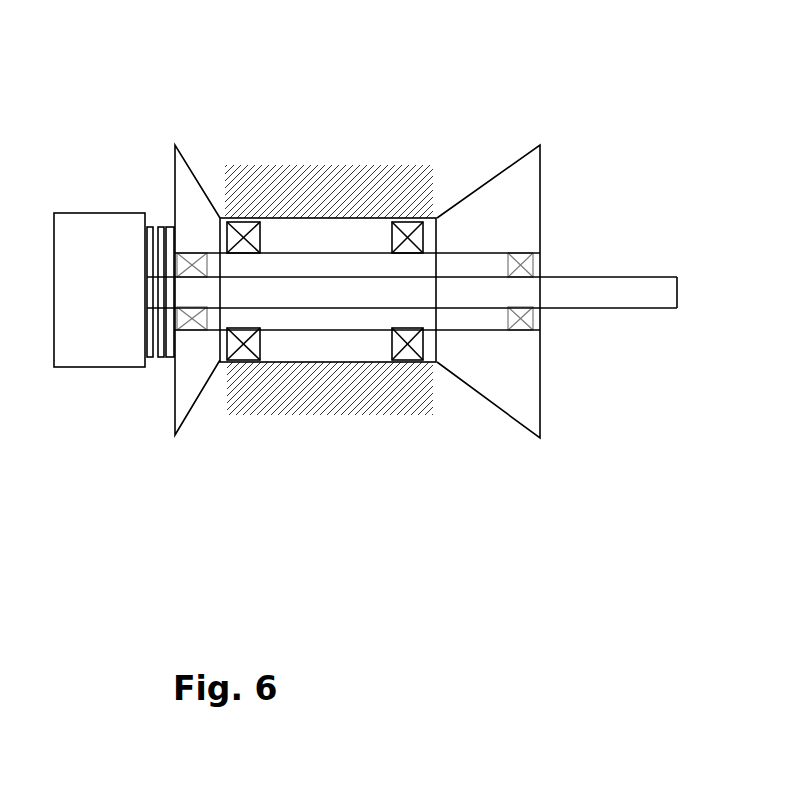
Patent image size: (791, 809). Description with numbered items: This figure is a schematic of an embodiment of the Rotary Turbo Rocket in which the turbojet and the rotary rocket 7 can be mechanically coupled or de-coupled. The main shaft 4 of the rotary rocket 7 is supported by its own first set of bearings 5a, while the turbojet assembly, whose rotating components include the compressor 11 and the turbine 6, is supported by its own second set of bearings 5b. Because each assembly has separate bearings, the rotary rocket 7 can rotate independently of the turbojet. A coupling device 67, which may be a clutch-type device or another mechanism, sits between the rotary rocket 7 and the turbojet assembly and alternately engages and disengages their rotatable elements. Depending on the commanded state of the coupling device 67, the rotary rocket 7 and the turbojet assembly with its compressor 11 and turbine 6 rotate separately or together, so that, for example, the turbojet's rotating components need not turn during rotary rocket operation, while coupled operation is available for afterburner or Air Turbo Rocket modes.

The main shaft 4 is at (647, 300).
The first set of bearings 5a is at (183, 328).
The second set of bearings 5b is at (243, 218).
The turbine 6 is at (198, 202).
The rotary rocket 7 is at (102, 228).
The compressor 11 is at (530, 182).
The coupling device 67 is at (157, 363).